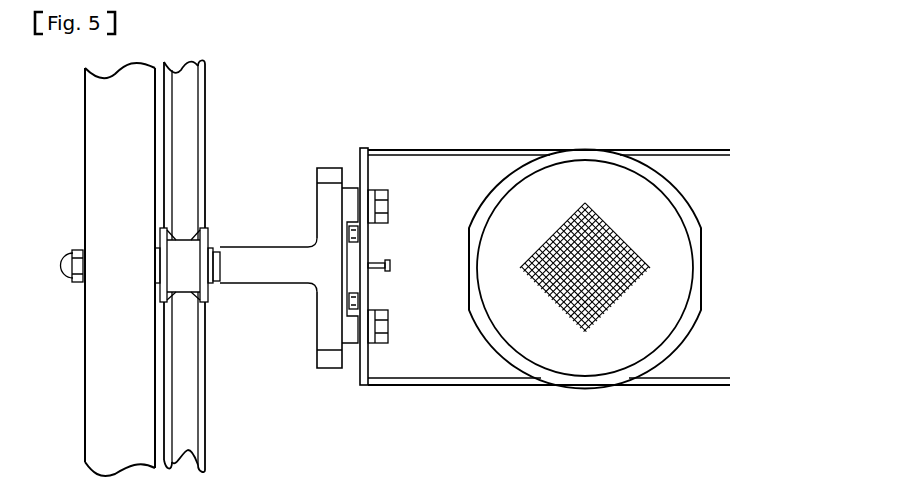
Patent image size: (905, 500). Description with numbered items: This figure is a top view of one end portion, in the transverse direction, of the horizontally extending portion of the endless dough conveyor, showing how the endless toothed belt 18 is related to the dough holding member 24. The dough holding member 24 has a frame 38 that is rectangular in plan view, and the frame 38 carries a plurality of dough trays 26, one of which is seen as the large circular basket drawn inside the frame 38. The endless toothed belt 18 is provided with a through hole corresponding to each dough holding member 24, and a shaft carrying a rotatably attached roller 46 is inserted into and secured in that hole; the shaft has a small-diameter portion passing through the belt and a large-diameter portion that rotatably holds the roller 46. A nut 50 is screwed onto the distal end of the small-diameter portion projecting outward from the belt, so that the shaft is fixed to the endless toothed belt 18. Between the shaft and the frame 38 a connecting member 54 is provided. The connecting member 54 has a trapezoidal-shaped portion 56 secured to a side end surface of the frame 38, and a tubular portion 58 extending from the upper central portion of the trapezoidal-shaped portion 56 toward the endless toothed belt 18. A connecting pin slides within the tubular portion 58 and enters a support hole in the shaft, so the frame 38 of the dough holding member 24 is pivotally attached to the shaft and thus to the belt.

The endless toothed belt 18 is at (100, 408).
The dough holding member 24 is at (653, 435).
The dough tray 26 is at (581, 140).
The frame 38 is at (665, 150).
The roller 46 is at (183, 248).
The nut 50 is at (72, 283).
The connecting member 54 is at (265, 243).
The trapezoidal-shaped portion 56 is at (330, 172).
The tubular portion 58 is at (268, 285).